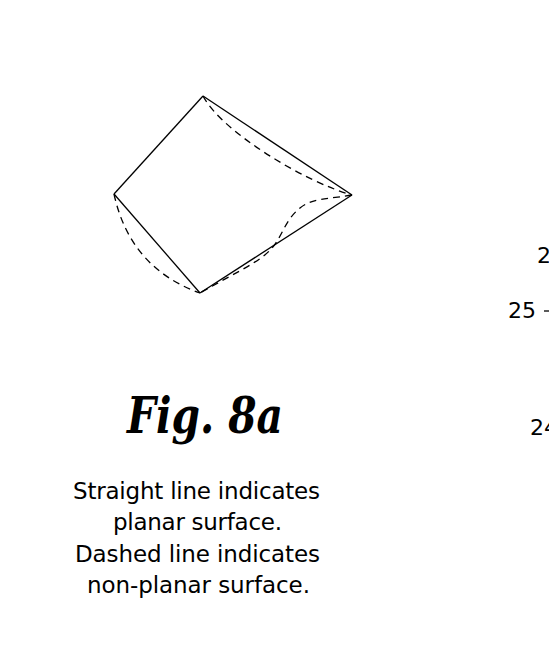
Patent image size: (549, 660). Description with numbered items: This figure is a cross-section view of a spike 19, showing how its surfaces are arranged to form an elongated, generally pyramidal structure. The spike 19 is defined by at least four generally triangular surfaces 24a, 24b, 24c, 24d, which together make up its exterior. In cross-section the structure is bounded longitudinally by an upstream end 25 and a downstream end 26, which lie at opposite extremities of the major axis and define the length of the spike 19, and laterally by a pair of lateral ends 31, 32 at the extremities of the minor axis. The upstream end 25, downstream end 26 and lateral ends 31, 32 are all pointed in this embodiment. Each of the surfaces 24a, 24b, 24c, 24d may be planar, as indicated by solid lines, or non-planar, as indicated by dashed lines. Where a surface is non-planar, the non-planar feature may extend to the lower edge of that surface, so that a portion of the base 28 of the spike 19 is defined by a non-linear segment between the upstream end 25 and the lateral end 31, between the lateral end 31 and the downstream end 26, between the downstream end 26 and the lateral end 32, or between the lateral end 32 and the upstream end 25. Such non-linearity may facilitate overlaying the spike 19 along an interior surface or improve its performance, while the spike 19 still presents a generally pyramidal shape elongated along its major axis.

The spike 19 is at (270, 67).
The surface 24a is at (159, 145).
The surface 24b is at (271, 140).
The surface 24c is at (287, 238).
The surface 24d is at (148, 233).
The upstream end 25 is at (114, 194).
The downstream end 26 is at (352, 195).
The base 28 is at (181, 120).
The lateral end 31 is at (203, 96).
The lateral end 32 is at (200, 293).